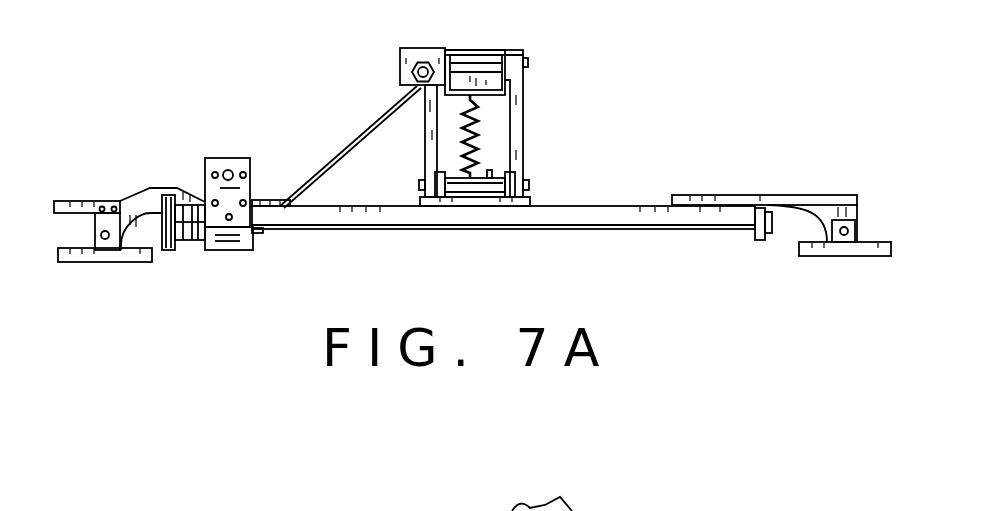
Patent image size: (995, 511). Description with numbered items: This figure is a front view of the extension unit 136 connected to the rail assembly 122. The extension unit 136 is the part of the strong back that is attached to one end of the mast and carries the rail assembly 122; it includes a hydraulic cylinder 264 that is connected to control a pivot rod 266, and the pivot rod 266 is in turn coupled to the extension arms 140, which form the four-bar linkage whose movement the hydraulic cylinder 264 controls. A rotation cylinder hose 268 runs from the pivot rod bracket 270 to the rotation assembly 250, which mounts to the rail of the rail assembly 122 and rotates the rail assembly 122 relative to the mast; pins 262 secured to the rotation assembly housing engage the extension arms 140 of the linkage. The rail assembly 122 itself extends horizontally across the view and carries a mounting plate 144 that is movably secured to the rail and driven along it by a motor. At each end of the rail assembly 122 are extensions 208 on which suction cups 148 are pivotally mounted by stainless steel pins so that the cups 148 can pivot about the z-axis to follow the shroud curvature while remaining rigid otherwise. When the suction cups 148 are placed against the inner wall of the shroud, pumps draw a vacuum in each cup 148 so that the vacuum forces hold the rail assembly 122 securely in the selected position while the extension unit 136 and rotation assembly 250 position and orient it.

The rail assembly 122 is at (659, 241).
The extension unit 136 is at (549, 60).
The extension arms 140 is at (522, 107).
The mounting plate 144 is at (235, 163).
The suction cups 148 is at (130, 256).
The extensions 208 is at (151, 200).
The rotation assembly 250 is at (543, 183).
The pins 262 is at (497, 180).
The hydraulic cylinder 264 is at (417, 55).
The pivot rod 266 is at (471, 68).
The rotation cylinder hose 268 is at (476, 136).
The pivot rod bracket 270 is at (460, 97).